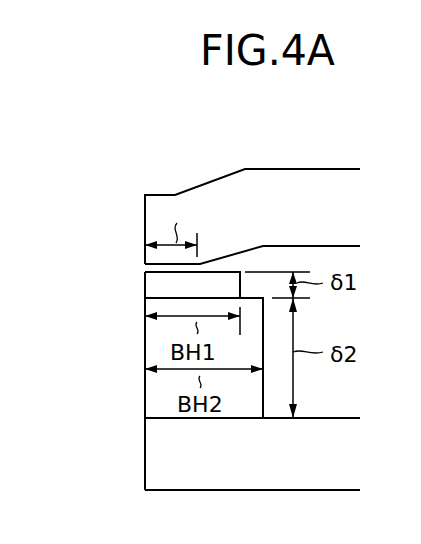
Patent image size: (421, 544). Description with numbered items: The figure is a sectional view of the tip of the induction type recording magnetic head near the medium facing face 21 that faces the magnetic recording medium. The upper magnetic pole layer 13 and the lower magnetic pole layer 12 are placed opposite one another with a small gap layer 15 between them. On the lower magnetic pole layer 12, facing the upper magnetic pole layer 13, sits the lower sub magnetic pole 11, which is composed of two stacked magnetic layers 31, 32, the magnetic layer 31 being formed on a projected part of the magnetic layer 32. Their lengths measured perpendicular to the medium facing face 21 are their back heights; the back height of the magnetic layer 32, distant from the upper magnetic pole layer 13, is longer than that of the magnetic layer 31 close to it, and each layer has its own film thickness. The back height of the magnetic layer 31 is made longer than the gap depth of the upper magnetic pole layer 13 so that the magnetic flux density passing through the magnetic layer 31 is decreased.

The lower sub magnetic pole 11 is at (60, 280).
The lower magnetic pole layer 12 is at (188, 480).
The upper magnetic pole layer 13 is at (235, 188).
The gap layer 15 is at (142, 267).
The medium facing face 21 is at (142, 403).
The magnetic layer 31 is at (145, 287).
The magnetic layer 32 is at (151, 343).